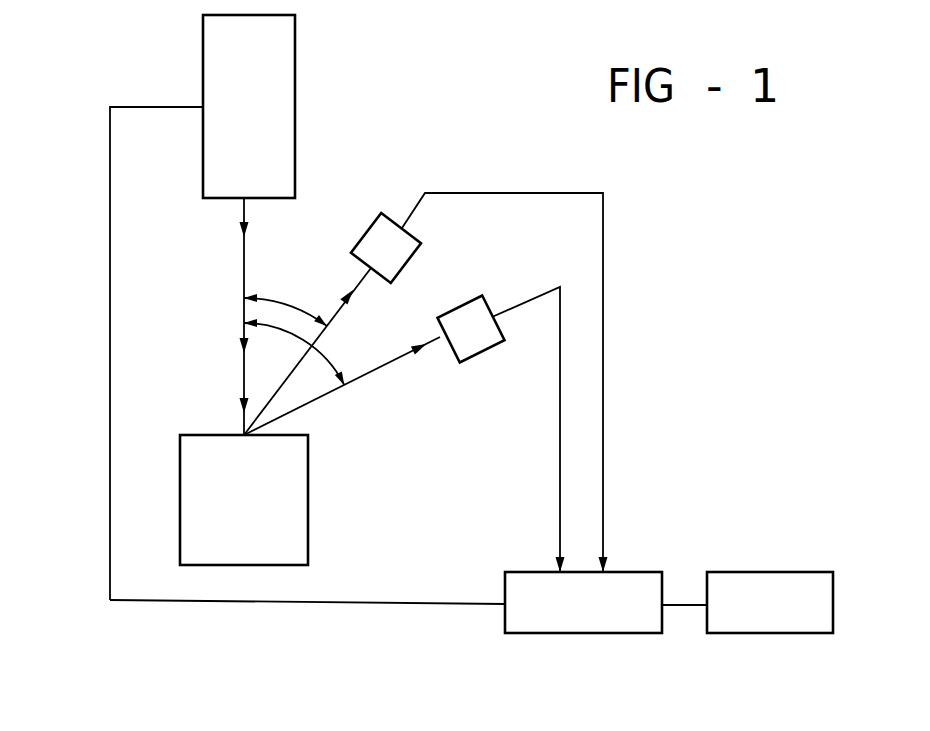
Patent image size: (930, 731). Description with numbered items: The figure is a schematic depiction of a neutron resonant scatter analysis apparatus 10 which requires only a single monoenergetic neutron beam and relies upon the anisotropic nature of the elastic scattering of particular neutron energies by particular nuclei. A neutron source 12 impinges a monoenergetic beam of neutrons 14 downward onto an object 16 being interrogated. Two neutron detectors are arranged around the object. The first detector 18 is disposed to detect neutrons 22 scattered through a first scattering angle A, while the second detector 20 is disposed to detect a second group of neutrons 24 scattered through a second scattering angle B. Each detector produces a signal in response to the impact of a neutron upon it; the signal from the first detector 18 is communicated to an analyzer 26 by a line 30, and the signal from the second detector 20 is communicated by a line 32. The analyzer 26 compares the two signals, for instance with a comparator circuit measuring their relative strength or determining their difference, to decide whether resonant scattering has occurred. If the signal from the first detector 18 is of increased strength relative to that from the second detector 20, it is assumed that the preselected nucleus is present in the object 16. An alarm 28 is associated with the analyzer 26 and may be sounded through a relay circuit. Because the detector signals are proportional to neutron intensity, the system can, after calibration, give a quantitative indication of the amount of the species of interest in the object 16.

The apparatus 10 is at (91, 118).
The neutron source 12 is at (290, 56).
The monoenergetic beam of neutrons 14 is at (244, 255).
The object 16 is at (308, 510).
The first detector 18 is at (390, 217).
The second detector 20 is at (465, 300).
The neutrons scattered through first scattering angle 22 is at (344, 304).
The second group of neutrons 24 is at (387, 372).
The analyzer 26 is at (620, 633).
The alarm 28 is at (767, 572).
The line 30 is at (603, 401).
The line 32 is at (560, 470).
The first scattering angle A is at (288, 302).
The second scattering angle B is at (330, 357).